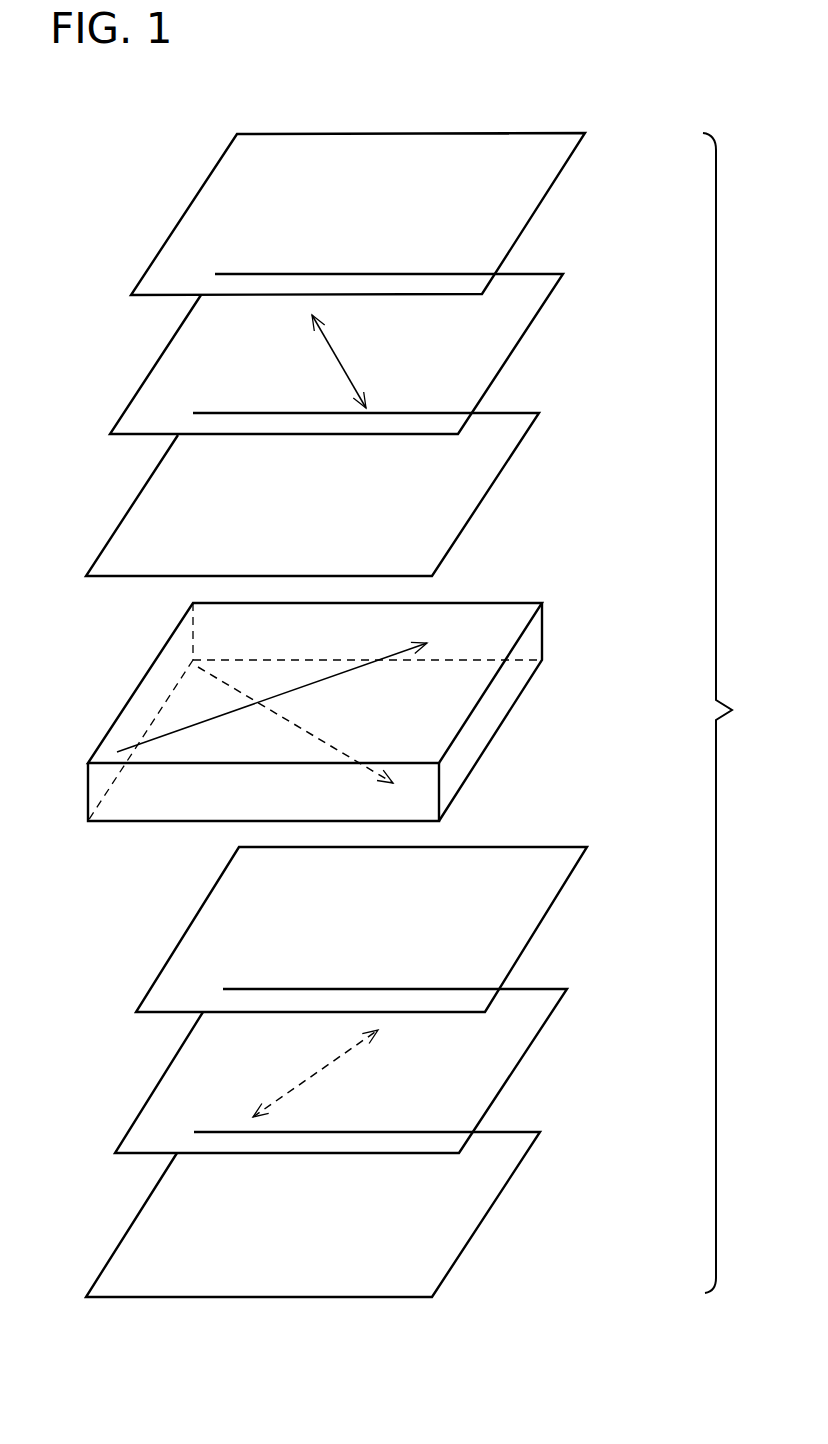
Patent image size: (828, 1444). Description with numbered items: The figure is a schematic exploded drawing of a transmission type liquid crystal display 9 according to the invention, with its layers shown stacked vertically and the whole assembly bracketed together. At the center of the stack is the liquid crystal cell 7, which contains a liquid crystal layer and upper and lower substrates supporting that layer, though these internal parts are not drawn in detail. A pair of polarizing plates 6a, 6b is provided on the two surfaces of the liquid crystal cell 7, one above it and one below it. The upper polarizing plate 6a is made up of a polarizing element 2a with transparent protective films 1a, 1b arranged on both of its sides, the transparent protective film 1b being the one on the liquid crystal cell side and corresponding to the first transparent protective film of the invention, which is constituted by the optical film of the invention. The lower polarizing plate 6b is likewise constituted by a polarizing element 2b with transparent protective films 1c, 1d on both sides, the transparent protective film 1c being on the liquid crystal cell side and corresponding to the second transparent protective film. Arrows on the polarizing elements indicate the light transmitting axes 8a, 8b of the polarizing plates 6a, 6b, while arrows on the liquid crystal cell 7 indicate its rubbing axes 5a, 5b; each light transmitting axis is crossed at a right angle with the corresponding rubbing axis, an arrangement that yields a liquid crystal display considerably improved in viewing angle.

The transparent protective film 1a is at (538, 208).
The polarizing element 2a is at (542, 312).
The polarizing plate 6a is at (545, 366).
The light transmitting axis 8a is at (337, 355).
The transparent protective film 1b is at (502, 473).
The liquid crystal cell 7 is at (529, 720).
The rubbing axis 5a is at (173, 732).
The rubbing axis 5b is at (223, 680).
The transparent protective film 1c is at (190, 925).
The polarizing element 2b is at (158, 1088).
The polarizing plate 6b is at (543, 1063).
The light transmitting axis 8b is at (317, 1073).
The transparent protective film 1d is at (130, 1225).
The transmission type liquid crystal display 9 is at (752, 723).